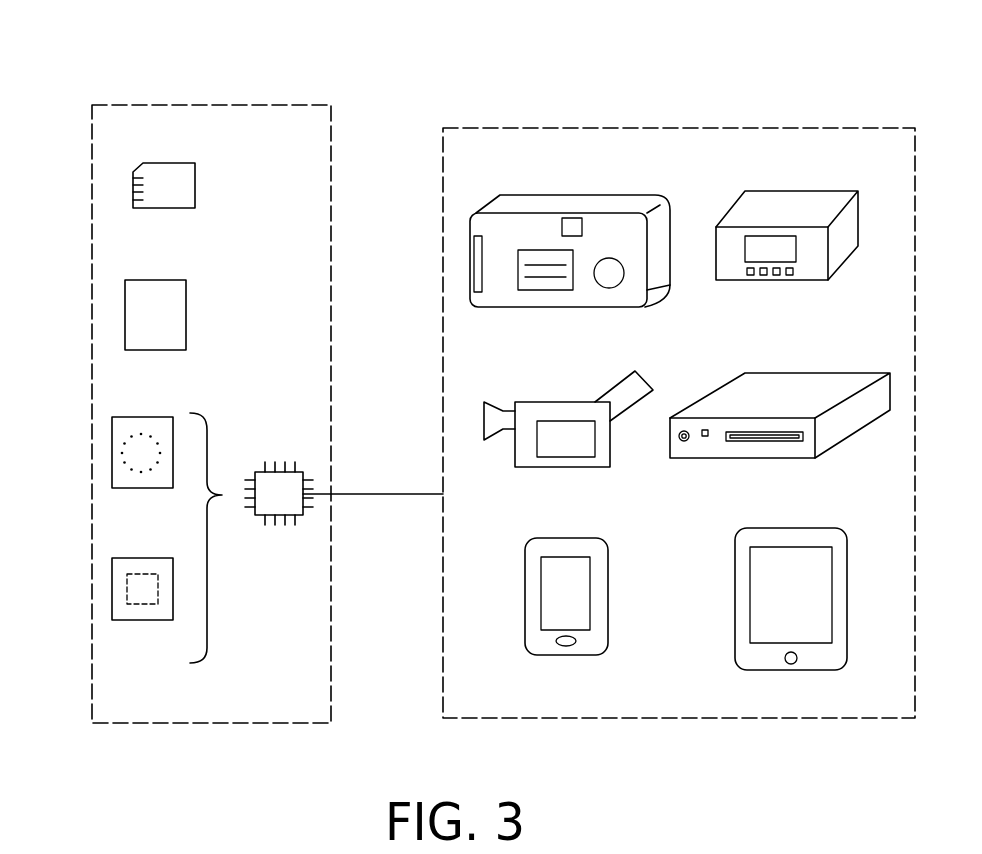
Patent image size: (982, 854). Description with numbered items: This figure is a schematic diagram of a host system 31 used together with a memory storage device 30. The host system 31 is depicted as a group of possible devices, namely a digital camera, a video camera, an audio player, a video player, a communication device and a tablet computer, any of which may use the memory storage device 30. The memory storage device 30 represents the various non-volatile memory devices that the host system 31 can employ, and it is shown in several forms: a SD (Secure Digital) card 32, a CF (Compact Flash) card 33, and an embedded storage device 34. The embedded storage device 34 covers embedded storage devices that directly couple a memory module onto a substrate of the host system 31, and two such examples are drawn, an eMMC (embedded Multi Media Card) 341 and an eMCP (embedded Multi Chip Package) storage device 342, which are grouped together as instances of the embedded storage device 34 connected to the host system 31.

The memory storage device 30 is at (201, 104).
The host system 31 is at (604, 127).
The SD card 32 is at (133, 192).
The CF card 33 is at (125, 318).
The embedded storage device 34 is at (280, 463).
The eMMC 341 is at (112, 455).
The eMCP storage device 342 is at (112, 590).